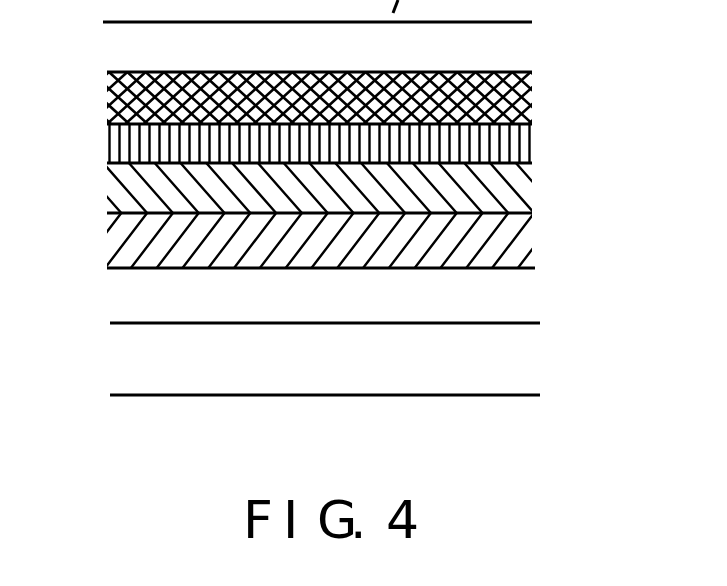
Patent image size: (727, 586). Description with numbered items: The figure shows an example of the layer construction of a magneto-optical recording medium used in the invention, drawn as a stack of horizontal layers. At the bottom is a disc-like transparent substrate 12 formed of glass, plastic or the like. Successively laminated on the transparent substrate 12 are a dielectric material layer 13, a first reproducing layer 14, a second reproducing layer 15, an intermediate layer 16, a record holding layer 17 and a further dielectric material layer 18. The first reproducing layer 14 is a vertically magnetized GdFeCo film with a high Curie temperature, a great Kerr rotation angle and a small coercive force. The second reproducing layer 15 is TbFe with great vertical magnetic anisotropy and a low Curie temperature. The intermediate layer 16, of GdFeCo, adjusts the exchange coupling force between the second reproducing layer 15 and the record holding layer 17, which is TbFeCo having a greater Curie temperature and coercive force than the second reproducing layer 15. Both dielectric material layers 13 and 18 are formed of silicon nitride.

The transparent substrate 12 is at (520, 361).
The dielectric material layer 13 is at (512, 297).
The first reproducing layer 14 is at (517, 241).
The second reproducing layer 15 is at (518, 184).
The intermediate layer 16 is at (523, 139).
The record holding layer 17 is at (533, 97).
The dielectric material layer 18 is at (511, 45).